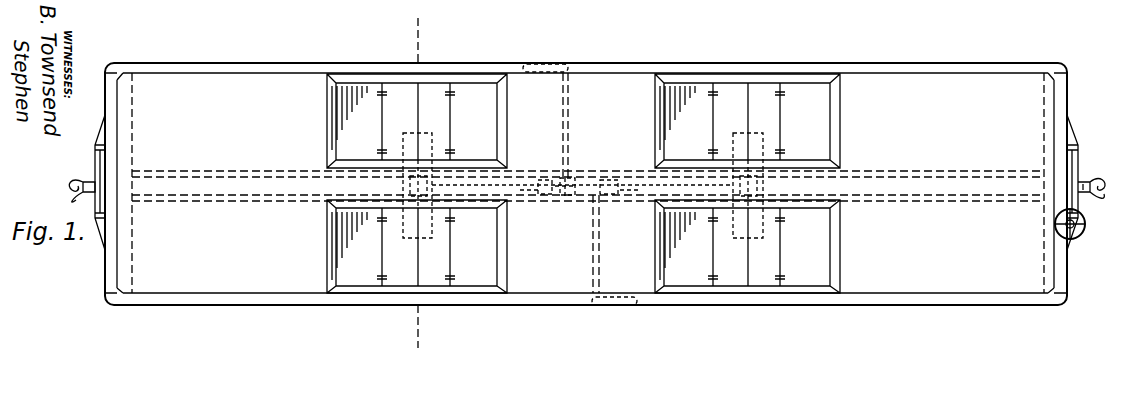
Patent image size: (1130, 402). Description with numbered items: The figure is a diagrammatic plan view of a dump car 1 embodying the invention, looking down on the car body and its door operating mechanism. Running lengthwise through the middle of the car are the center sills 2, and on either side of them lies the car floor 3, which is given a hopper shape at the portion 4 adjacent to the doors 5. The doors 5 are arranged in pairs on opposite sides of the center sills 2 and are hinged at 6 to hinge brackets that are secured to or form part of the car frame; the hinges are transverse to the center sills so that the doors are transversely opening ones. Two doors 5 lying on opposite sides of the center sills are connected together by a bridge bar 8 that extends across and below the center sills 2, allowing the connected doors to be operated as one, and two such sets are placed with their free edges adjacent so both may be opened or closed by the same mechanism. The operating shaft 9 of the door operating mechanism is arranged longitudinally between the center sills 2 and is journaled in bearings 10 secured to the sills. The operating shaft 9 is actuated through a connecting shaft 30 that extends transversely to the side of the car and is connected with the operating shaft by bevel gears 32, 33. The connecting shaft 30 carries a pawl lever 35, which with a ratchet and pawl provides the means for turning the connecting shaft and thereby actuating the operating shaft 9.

The dump car 1 is at (762, 307).
The center sills 2 is at (226, 172).
The car floor 3 is at (588, 183).
The hopper-shaped portion 4 is at (583, 183).
The doors 5 is at (581, 184).
The hinges 6 is at (452, 153).
The bridge bar 8 is at (423, 140).
The operating shaft 9 is at (526, 205).
The bearings 10 is at (543, 172).
The connecting shaft 30 is at (571, 112).
The bevel gear 32 is at (552, 198).
The bevel gear 33 is at (570, 176).
The pawl lever 35 is at (545, 62).